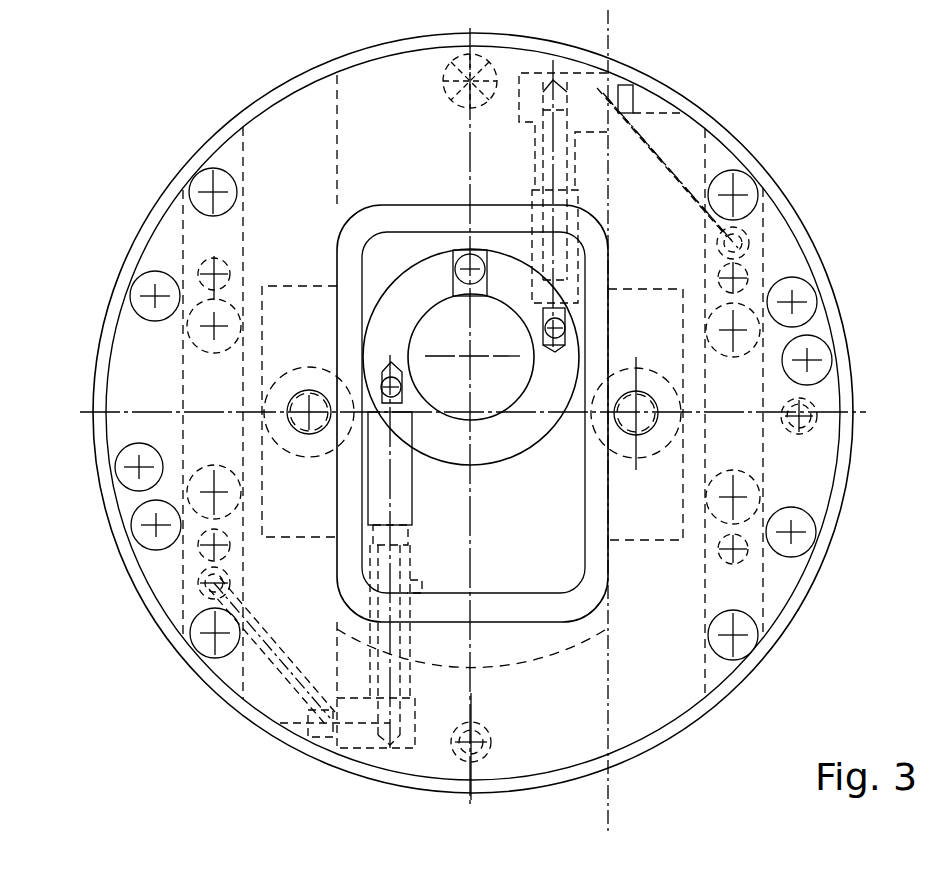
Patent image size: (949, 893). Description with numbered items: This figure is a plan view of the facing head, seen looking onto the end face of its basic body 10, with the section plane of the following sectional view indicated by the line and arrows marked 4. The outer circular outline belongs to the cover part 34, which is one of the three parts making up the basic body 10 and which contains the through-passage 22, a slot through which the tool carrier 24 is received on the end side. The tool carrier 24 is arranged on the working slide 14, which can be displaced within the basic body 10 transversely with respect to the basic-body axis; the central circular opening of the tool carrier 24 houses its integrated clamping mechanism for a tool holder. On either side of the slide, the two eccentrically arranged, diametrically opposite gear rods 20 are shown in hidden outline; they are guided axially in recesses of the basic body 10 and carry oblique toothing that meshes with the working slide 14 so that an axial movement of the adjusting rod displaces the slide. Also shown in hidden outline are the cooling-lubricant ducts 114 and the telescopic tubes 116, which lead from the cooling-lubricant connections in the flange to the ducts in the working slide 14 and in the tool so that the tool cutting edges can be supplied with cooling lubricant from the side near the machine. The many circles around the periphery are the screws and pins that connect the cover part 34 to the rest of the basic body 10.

The basic body 10 is at (322, 116).
The working slide 14 is at (396, 100).
The cover part 34 is at (290, 135).
The gear rods 20 is at (320, 380).
The through-passage 22 is at (530, 584).
The tool carrier 24 is at (520, 430).
The cooling-lubricant ducts 114 is at (690, 185).
The telescopic tubes 116 is at (553, 170).
The section line 4- 4 is at (608, 14).